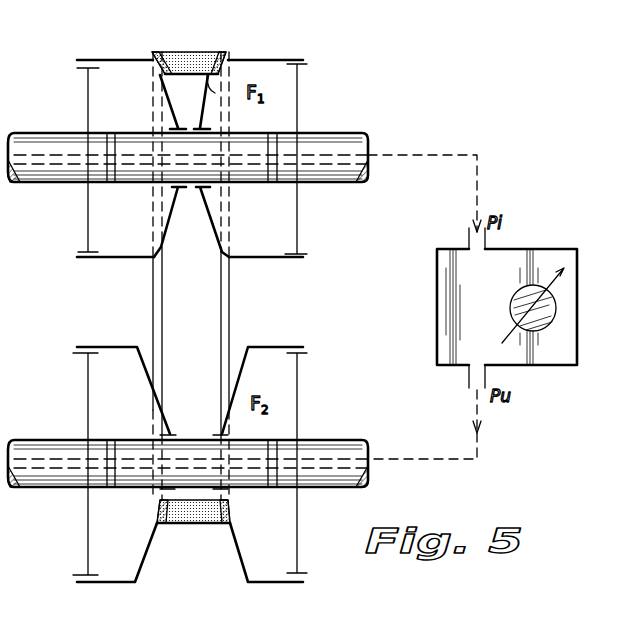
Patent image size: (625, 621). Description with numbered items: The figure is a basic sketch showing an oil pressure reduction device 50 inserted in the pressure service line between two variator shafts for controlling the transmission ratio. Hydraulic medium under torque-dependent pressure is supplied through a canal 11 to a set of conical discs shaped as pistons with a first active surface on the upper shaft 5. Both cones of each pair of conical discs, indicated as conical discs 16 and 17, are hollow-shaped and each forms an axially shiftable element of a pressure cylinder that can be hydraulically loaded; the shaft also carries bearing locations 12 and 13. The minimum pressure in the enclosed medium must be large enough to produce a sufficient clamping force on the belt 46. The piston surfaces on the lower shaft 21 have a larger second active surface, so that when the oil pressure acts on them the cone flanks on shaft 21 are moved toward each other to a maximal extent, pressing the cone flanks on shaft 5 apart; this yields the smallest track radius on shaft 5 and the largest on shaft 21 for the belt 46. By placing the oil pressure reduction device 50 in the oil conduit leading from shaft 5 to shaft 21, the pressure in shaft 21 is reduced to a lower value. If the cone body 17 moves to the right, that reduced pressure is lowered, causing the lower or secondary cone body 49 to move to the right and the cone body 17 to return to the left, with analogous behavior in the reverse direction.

The shaft 5 is at (342, 137).
The canal 11 is at (63, 159).
The bearing 12 is at (113, 143).
The bearing 13 is at (272, 134).
The conical disc 16 is at (152, 52).
The conical disc 17 is at (217, 51).
The belt 46 is at (185, 52).
The secondary cone body 49 is at (238, 355).
The shaft 21 is at (330, 438).
The oil pressure reduction device 50 is at (437, 298).